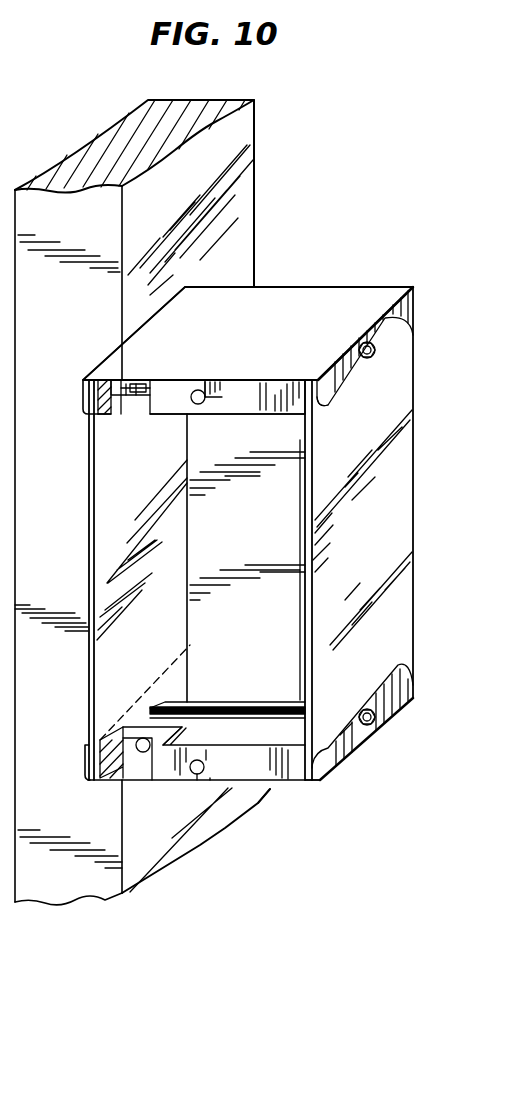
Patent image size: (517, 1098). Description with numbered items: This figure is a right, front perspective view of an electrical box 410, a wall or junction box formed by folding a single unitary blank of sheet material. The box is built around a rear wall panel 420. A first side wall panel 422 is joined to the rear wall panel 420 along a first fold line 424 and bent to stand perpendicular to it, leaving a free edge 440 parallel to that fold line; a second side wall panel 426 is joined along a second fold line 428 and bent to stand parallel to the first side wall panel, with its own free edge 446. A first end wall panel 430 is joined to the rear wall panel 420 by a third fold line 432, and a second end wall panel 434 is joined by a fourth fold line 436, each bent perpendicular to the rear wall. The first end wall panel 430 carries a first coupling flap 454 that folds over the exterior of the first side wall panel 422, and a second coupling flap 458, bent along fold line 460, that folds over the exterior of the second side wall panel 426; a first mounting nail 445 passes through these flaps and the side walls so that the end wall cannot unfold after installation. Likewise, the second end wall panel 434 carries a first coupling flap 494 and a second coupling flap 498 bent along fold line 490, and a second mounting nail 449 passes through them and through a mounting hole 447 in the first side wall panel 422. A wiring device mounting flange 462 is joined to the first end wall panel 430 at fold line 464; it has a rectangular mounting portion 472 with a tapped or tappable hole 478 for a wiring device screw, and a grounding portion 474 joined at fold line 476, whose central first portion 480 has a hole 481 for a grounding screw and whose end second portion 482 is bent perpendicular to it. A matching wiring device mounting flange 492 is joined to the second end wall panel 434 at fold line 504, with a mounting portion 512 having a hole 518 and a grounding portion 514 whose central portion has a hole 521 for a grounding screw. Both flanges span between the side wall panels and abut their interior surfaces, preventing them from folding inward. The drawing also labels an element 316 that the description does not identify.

The post 316 is at (65, 905).
The electrical box 410 is at (318, 217).
The rear wall panel 420 is at (259, 577).
The first side wall panel 422 is at (87, 568).
The first fold line 424 is at (190, 545).
The second side wall panel 426 is at (305, 605).
The second fold line 428 is at (412, 553).
The first end wall panel 430 is at (256, 326).
The third fold line 432 is at (283, 285).
The second end wall panel 434 is at (259, 779).
The fourth fold line 436 is at (290, 708).
The free edge 440 is at (89, 535).
The first mounting nail 445 is at (362, 362).
The free edge 446 is at (315, 525).
The mounting hole 447 is at (150, 705).
The second mounting nail 449 is at (200, 705).
The first coupling flap 454 is at (82, 395).
The second coupling flap 458 is at (352, 398).
The fold line 460 is at (375, 312).
The wiring device mounting flange 462 is at (280, 380).
The fold line 464 is at (266, 380).
The mounting portion 472 is at (228, 418).
The grounding portion 474 is at (105, 418).
The fold line 476 is at (160, 397).
The mounting hole 478 is at (214, 397).
The first portion 480 is at (140, 397).
The mounting hole 481 is at (130, 397).
The second portion 482 is at (124, 380).
The fold line 490 is at (352, 762).
The wiring device mounting flange 492 is at (282, 785).
The first coupling flap 494 is at (85, 760).
The second coupling flap 498 is at (365, 708).
The fold line 504 is at (263, 790).
The mounting portion 512 is at (245, 740).
The grounding portion 514 is at (132, 763).
The mounting hole 518 is at (198, 775).
The mounting hole 521 is at (143, 738).